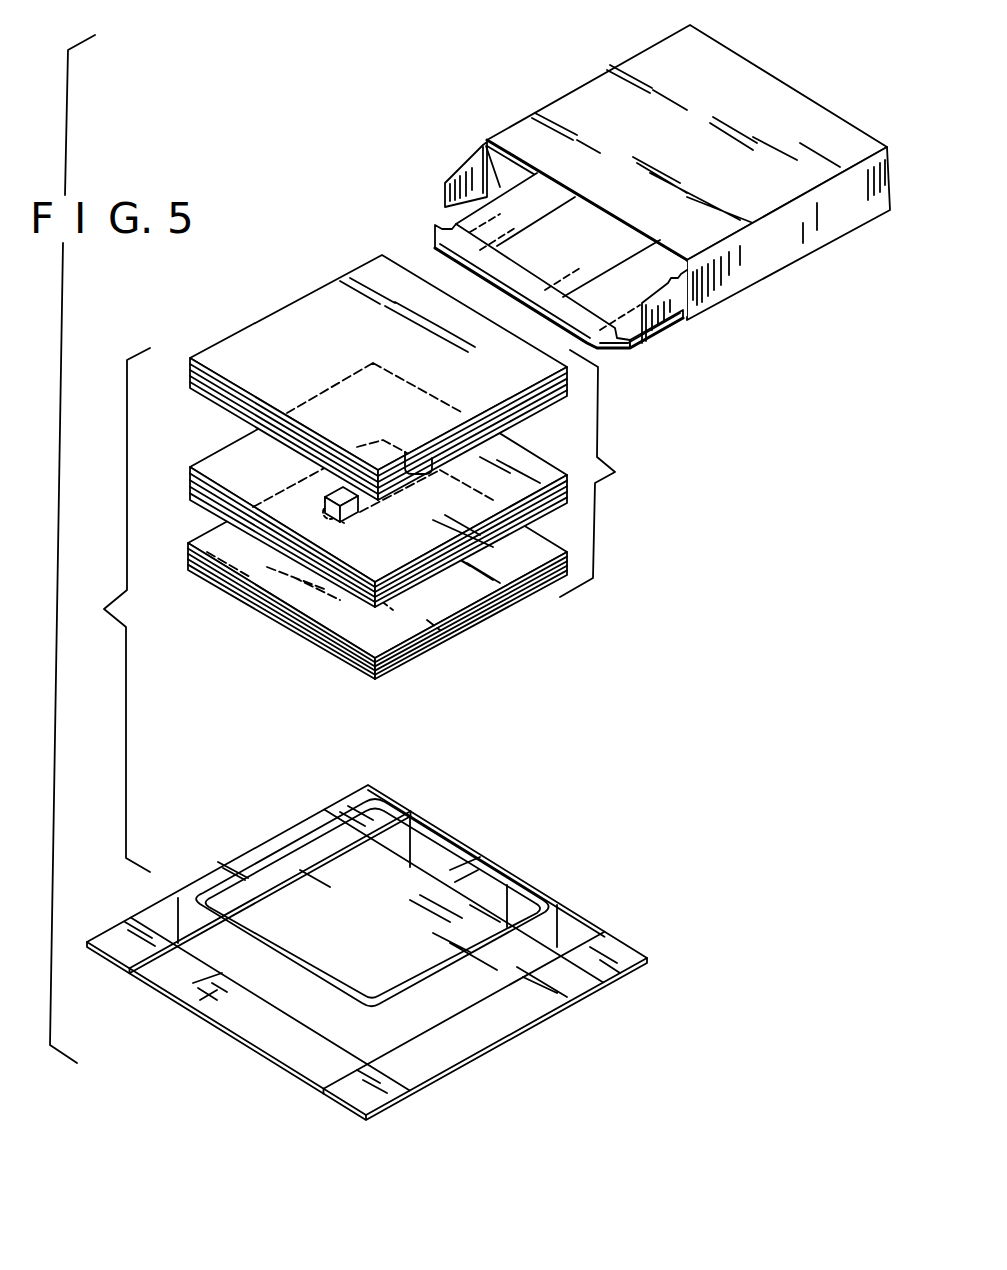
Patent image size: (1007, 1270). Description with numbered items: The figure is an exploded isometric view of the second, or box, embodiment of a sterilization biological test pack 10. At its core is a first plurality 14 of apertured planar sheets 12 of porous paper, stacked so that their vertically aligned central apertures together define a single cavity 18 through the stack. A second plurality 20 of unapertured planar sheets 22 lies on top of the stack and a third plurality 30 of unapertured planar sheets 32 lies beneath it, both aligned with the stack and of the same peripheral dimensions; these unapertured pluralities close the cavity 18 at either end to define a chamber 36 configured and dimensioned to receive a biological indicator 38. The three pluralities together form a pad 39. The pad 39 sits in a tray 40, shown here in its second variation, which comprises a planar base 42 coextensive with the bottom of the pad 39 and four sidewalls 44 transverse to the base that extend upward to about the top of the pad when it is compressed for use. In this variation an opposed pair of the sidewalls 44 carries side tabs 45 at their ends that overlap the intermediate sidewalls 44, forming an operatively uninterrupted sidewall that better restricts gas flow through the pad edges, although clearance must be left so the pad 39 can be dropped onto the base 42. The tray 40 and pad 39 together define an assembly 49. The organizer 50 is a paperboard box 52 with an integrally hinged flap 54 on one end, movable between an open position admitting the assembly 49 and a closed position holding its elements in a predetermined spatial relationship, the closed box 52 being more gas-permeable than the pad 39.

The sterilization biological test pack 10 is at (307, 207).
The apertured planar sheets 12 is at (190, 487).
The first plurality of apertured sheets 14 is at (223, 443).
The cavity 18 is at (370, 508).
The second plurality of unapertured sheets 20 is at (300, 292).
The unapertured planar sheets 22 is at (190, 374).
The third plurality of unapertured sheets 30 is at (297, 632).
The unapertured planar sheets 32 is at (188, 560).
The chamber 36 is at (360, 520).
The biological indicator 38 is at (340, 484).
The pad 39 is at (404, 465).
The tray 40 is at (255, 848).
The tray base 42 is at (387, 911).
The tray sidewalls 44 is at (155, 910).
The side tabs 45 is at (123, 942).
The assembly 49 is at (378, 695).
The organizer 50 is at (588, 78).
The box 52 is at (776, 243).
The integrally hinged flap 54 is at (487, 217).